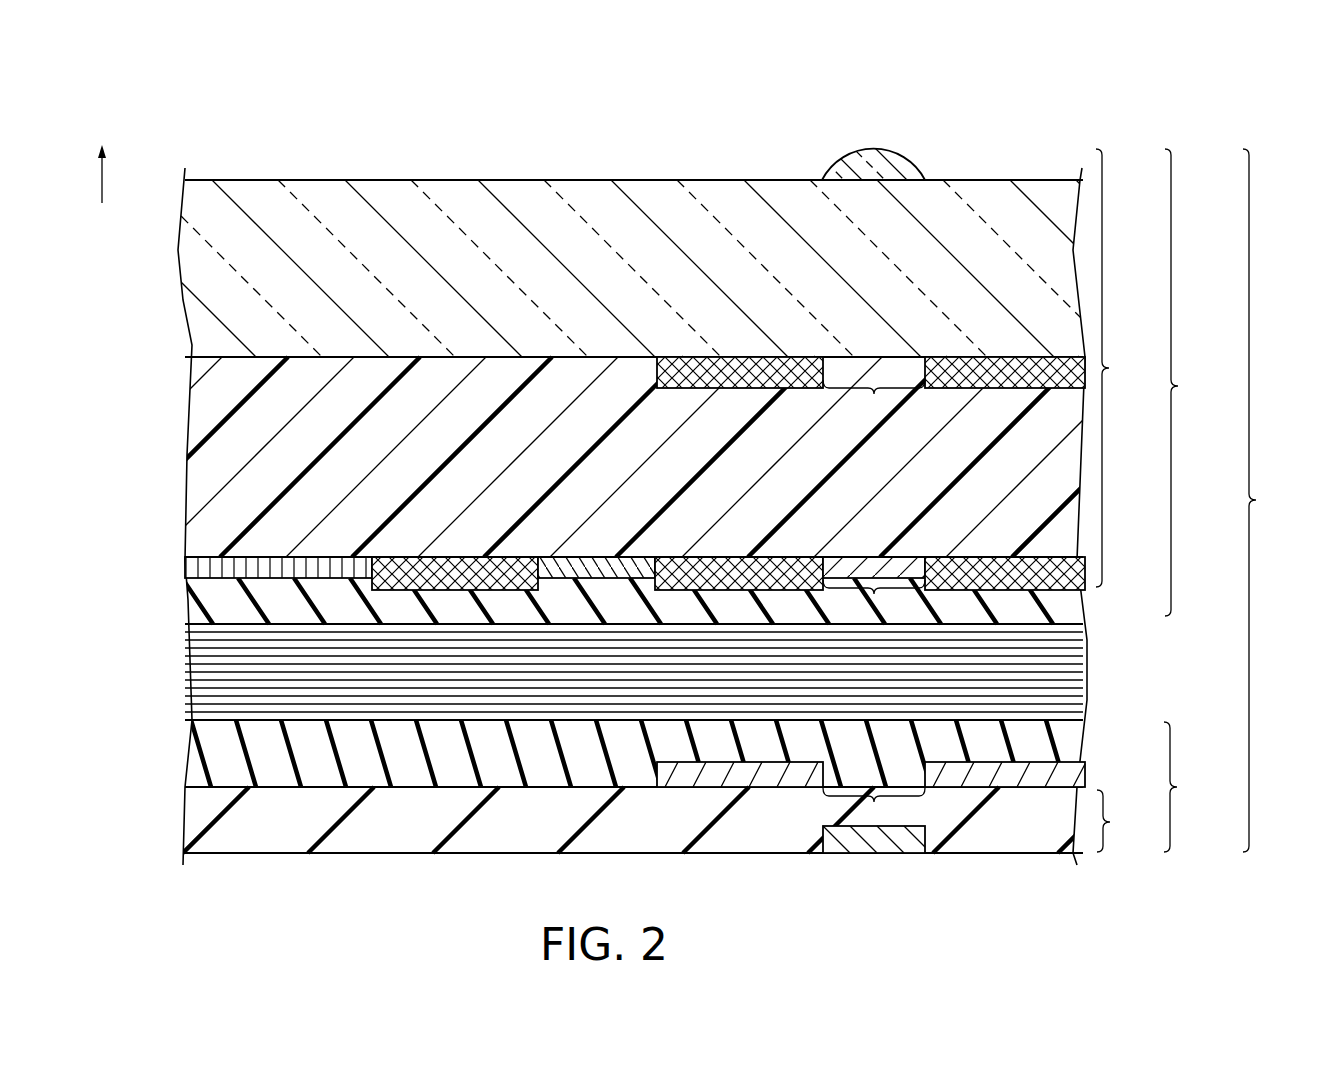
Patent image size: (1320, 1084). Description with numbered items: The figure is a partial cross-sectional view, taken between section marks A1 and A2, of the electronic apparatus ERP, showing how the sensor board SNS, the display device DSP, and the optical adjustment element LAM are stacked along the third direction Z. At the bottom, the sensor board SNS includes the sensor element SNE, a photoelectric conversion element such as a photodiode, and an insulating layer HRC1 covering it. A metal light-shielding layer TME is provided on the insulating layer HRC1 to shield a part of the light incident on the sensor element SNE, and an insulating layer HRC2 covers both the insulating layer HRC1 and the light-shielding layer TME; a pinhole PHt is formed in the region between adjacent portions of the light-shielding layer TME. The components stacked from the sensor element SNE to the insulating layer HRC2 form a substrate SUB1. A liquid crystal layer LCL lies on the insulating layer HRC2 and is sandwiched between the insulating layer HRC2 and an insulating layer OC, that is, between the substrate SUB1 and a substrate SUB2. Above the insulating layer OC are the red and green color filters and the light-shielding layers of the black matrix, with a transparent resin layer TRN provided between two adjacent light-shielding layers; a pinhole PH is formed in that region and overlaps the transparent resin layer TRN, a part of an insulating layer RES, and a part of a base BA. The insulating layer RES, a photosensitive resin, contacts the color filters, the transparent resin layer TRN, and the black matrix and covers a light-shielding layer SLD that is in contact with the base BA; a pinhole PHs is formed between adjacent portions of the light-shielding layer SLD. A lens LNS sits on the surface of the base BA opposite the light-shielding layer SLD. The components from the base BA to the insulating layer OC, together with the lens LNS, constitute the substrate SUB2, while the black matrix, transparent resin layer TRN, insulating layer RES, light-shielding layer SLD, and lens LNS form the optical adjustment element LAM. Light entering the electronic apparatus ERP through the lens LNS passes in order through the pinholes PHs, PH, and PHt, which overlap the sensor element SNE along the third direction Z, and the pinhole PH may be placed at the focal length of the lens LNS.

The third direction Z is at (102, 156).
The section line end A1 is at (179, 536).
The section line end A2 is at (1080, 536).
The base BA is at (190, 302).
The lens LNS is at (876, 148).
The electronic apparatus ERP is at (985, 101).
The insulating layer RES is at (191, 454).
The light-shielding layer SLD is at (757, 360).
The pinhole PHs is at (874, 401).
The insulating layer OC is at (190, 599).
The transparent resin layer TRN is at (883, 568).
The pinhole PH is at (874, 602).
The liquid crystal layer LCL is at (191, 676).
The insulating layer HRC2 is at (191, 749).
The insulating layer HRC1 is at (191, 822).
The light-shielding layer TME is at (735, 778).
The sensor element SNE is at (907, 845).
The pinhole PHt is at (874, 802).
The optical adjustment element LAM is at (1131, 368).
The substrate SUB2 is at (1206, 382).
The display device DSP is at (1277, 500).
The substrate SUB1 is at (1204, 787).
The sensor board SNS is at (1131, 821).